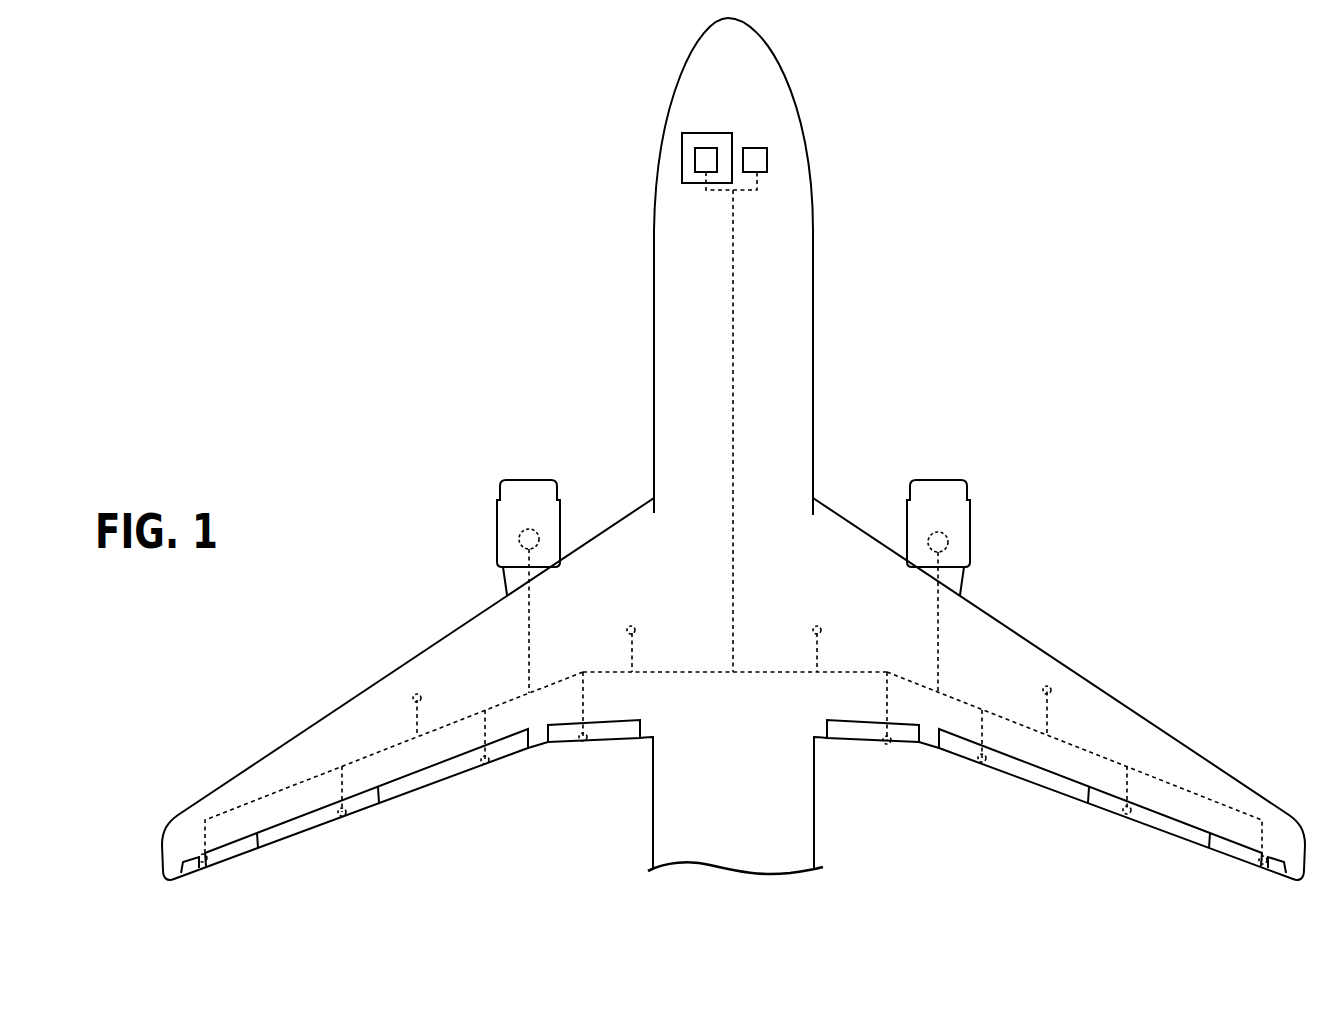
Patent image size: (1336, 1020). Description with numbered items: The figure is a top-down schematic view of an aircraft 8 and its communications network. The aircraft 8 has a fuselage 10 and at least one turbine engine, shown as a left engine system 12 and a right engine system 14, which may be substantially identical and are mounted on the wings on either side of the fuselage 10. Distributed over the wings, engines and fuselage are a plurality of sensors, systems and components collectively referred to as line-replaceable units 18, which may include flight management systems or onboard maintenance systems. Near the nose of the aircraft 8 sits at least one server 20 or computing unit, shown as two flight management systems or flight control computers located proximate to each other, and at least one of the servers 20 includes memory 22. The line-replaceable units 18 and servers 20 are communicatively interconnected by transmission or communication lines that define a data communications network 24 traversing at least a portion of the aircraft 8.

The aircraft 8 is at (527, 49).
The fuselage 10 is at (818, 363).
The left engine system 12 is at (528, 490).
The right engine system 14 is at (952, 493).
The line-replaceable units 18 is at (542, 535).
The server 20 is at (682, 160).
The memory 22 is at (705, 148).
The data communications network 24 is at (733, 365).